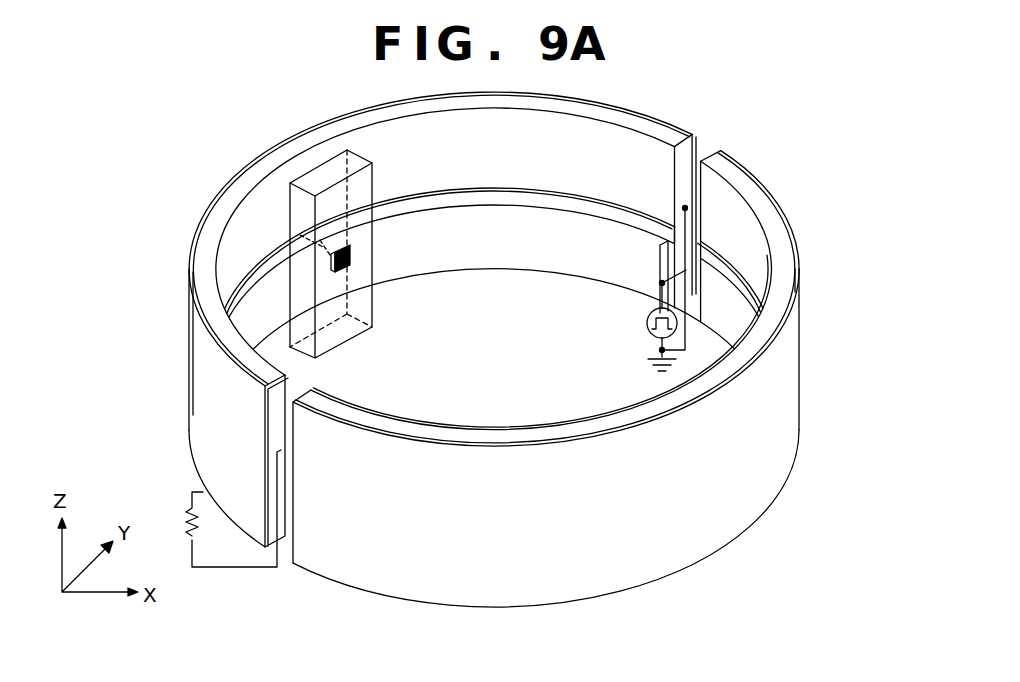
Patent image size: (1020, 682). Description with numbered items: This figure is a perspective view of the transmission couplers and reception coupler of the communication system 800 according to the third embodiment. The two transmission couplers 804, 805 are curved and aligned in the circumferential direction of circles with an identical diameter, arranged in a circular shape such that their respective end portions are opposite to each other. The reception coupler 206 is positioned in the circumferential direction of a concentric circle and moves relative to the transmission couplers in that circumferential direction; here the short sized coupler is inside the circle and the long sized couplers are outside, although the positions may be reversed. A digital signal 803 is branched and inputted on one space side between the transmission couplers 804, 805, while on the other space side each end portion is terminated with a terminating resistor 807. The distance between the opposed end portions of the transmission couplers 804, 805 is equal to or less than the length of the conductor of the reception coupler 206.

The communication system 800 is at (791, 142).
The transmission coupler 804 is at (284, 142).
The transmission coupler 805 is at (799, 240).
The reception coupler 206 is at (352, 331).
The digital signal 803 is at (646, 322).
The terminating resistor 807 is at (190, 516).